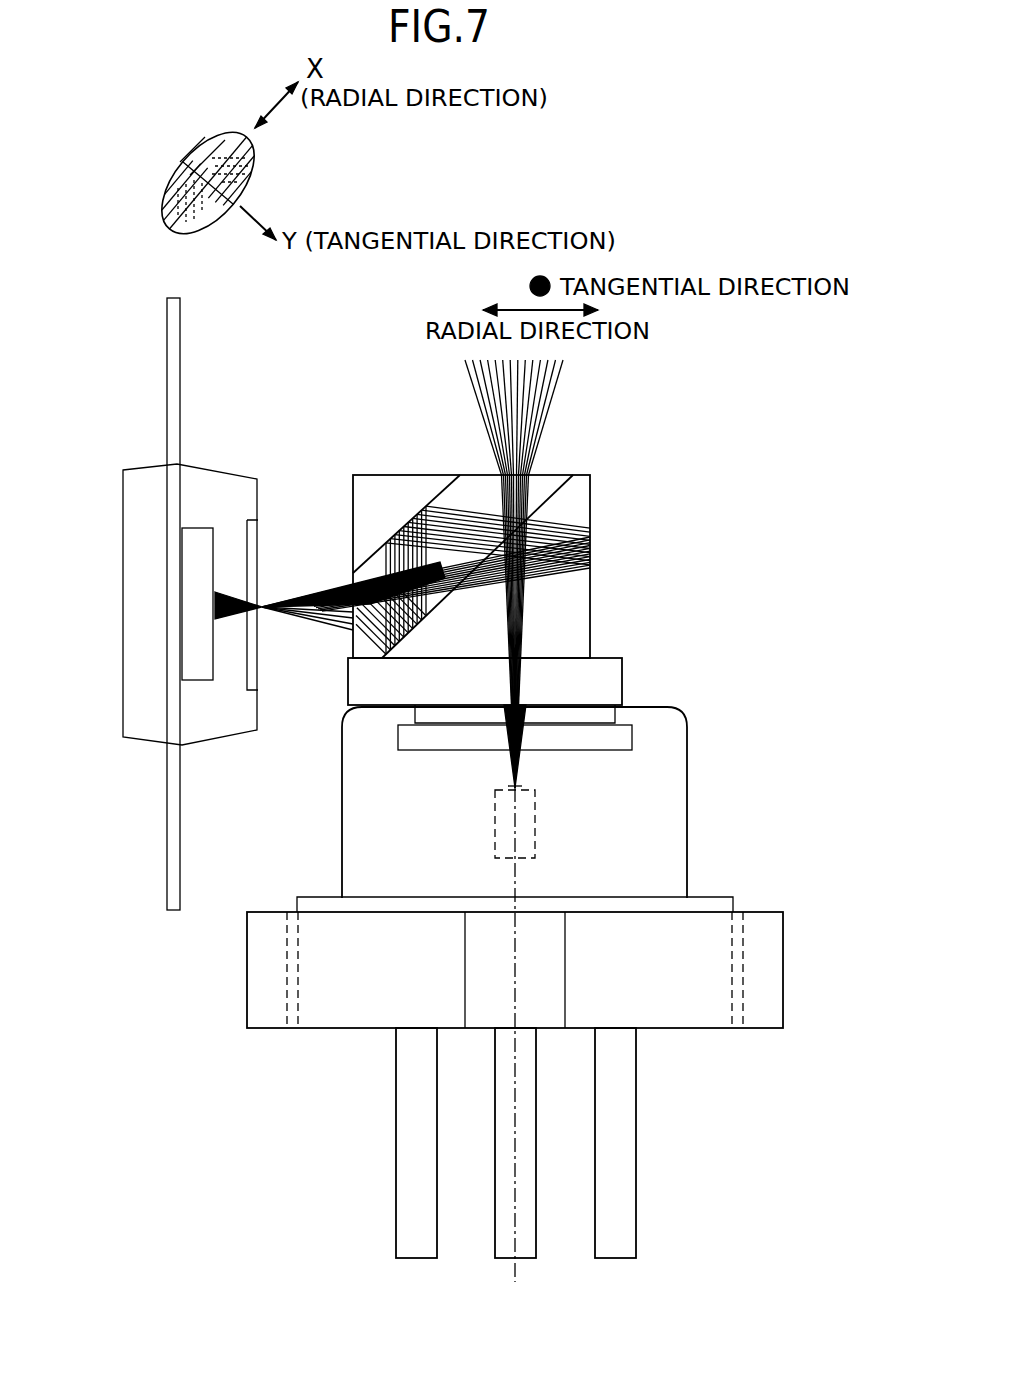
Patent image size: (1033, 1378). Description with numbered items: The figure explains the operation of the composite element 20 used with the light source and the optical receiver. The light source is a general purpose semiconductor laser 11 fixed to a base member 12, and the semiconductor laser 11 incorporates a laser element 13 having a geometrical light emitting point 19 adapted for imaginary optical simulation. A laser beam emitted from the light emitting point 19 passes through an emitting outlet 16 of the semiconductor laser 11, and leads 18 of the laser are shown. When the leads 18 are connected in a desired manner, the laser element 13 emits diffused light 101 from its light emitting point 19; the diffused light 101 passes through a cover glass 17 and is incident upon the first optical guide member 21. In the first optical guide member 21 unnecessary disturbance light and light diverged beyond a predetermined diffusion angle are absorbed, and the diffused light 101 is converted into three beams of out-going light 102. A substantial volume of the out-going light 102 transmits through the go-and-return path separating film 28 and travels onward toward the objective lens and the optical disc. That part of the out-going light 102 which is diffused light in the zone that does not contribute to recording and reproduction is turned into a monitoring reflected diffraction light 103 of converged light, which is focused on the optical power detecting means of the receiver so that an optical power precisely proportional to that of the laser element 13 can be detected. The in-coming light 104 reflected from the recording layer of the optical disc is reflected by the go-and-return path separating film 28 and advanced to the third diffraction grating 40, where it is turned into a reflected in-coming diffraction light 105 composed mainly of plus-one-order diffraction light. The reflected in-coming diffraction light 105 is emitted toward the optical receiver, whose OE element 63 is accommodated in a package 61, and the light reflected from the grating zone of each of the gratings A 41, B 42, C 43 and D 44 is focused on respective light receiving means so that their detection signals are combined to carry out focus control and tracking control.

The semiconductor laser 11 is at (690, 775).
The base member 12 is at (765, 912).
The laser element 13 is at (535, 825).
The emitting outlet 16 is at (428, 717).
The cover glass 17 is at (623, 733).
The leads 18 is at (629, 1143).
The light emitting point 19 is at (512, 788).
The composite element 20 is at (587, 465).
The first optical guide member 21 is at (615, 692).
The go-and-return path separating film 28 is at (560, 493).
The third diffraction grating 40 is at (398, 524).
The grating A 41 is at (258, 174).
The grating B 42 is at (195, 156).
The grating C 43 is at (172, 226).
The grating D 44 is at (235, 141).
The package 61 is at (126, 502).
The OE element 63 is at (193, 672).
The diffused light 101 is at (517, 758).
The out-going light 102 is at (538, 603).
The monitoring reflected diffraction light 103 is at (330, 592).
The in-coming light 104 is at (558, 410).
The reflected in-coming diffraction light 105 is at (244, 524).